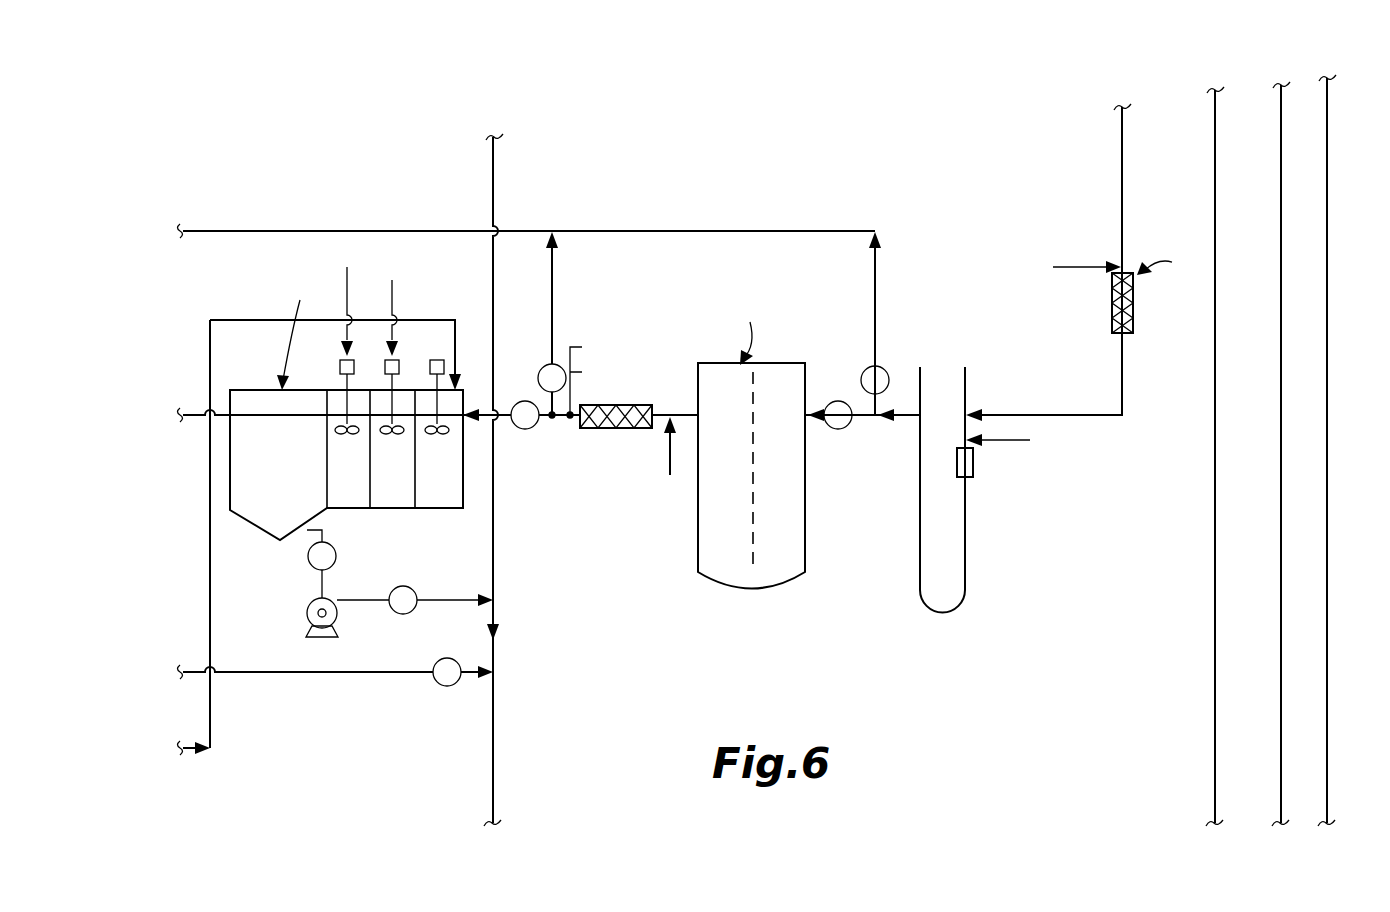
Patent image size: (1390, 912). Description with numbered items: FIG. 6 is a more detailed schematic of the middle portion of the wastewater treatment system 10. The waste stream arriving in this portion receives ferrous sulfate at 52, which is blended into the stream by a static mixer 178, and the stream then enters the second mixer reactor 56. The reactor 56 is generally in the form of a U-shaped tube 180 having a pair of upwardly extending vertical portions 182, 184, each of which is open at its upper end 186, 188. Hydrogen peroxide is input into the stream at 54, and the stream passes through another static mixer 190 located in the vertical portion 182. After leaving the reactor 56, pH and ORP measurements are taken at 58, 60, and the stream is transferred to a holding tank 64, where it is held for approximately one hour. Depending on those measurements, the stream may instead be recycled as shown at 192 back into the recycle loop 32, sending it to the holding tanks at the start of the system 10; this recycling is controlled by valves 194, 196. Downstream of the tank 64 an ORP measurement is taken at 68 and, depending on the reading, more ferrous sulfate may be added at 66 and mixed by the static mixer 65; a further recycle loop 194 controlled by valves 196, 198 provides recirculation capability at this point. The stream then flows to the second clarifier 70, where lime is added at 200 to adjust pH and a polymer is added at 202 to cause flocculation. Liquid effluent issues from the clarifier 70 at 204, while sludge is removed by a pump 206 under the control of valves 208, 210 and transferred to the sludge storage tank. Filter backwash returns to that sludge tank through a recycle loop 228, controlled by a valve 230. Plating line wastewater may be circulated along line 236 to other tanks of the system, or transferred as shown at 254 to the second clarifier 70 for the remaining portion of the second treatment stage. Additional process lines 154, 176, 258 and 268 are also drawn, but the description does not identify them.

The system 10 is at (978, 707).
The recycle loop 32 is at (374, 230).
The ferrous sulfate addition point 52 is at (1078, 264).
The hydrogen peroxide input point 54 is at (1013, 442).
The second mixer reactor 56 is at (975, 605).
The pH measurement point 58 is at (905, 418).
The ORP measurement point 60 is at (913, 422).
The holding tank 64 is at (750, 590).
The static mixer 65 is at (626, 405).
The ferrous sulfate addition point 66 is at (667, 453).
The ORP measurement point 68 is at (597, 375).
The second clarifier 70 is at (298, 388).
The main line 154 is at (495, 175).
The feed line 176 is at (1122, 140).
The static mixer 178 is at (1112, 312).
The U-shaped tube 180 is at (942, 614).
The vertical portion 182 is at (967, 560).
The vertical portion 184 is at (920, 560).
The upper end 186 is at (966, 367).
The upper end 188 is at (918, 367).
The static mixer 190 is at (975, 477).
The recycle line 192 is at (878, 260).
The valve 194 is at (554, 268).
The valve 196 is at (542, 372).
The valve 198 is at (520, 388).
The lime addition point 200 is at (392, 296).
The polymer addition point 202 is at (347, 282).
The effluent outlet 204 is at (200, 410).
The pump 206 is at (307, 611).
The valve 208 is at (336, 556).
The valve 210 is at (422, 580).
The recycle loop 228 is at (346, 675).
The valve 230 is at (447, 688).
The plating line wastewater circulation line 236 is at (1281, 492).
The plating line wastewater transfer line 254 is at (210, 568).
The line 258 is at (1327, 412).
The line 268 is at (1215, 410).